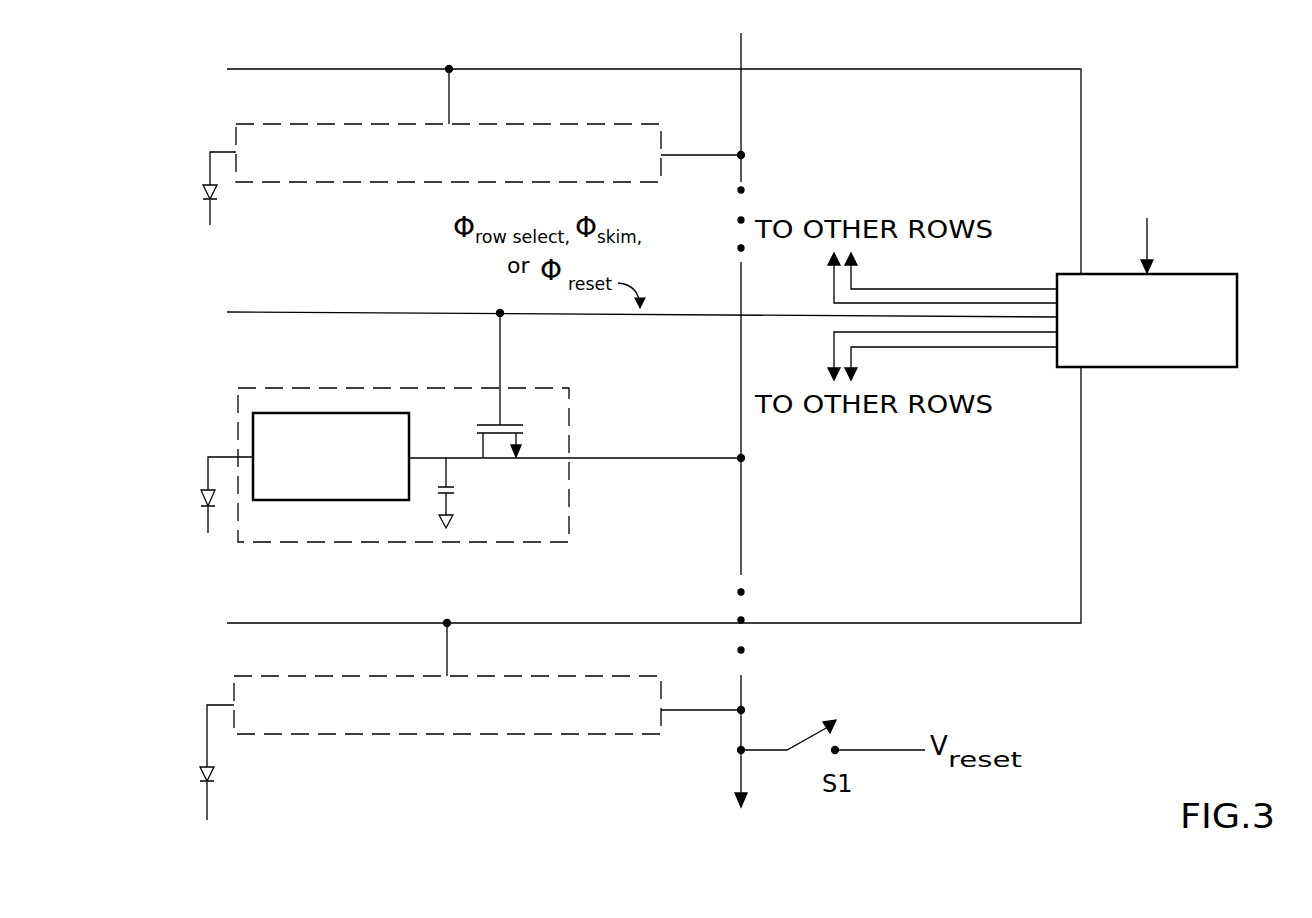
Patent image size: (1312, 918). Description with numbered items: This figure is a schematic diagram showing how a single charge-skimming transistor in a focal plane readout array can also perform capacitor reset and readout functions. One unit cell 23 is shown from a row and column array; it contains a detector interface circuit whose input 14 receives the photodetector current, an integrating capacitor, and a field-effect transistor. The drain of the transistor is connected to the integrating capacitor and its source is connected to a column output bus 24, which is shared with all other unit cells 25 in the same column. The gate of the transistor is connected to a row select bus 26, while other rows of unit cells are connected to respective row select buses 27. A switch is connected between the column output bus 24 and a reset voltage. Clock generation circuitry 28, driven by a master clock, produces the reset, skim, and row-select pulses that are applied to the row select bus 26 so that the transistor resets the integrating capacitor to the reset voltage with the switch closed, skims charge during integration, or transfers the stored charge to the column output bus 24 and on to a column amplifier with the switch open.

The input 14 is at (252, 431).
The unit cell 23 is at (449, 443).
The column output bus 24 is at (738, 417).
The unit cells 25 is at (250, 120).
The row select bus 26 is at (238, 312).
The row select buses 27 is at (584, 69).
The clock generation circuitry 28 is at (1145, 368).